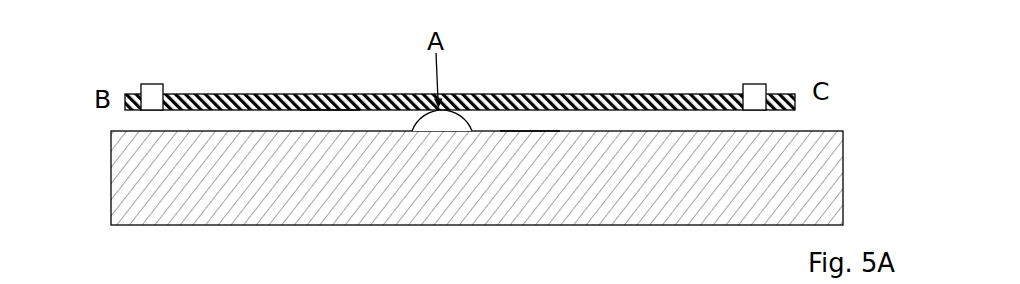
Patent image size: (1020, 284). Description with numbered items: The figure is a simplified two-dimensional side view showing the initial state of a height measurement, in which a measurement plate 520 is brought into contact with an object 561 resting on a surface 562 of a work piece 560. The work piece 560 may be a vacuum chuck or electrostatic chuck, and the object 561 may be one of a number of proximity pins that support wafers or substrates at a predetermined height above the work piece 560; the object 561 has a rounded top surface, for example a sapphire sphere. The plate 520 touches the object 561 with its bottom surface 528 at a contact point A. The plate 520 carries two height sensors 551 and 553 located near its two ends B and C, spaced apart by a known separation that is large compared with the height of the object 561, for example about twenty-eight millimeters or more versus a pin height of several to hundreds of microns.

The measurement plate 520 is at (460, 78).
The bottom surface 528 is at (330, 118).
The height sensor 551 is at (156, 77).
The height sensor 553 is at (751, 77).
The work piece 560 is at (526, 190).
The object 561 is at (430, 127).
The surface 562 is at (527, 122).